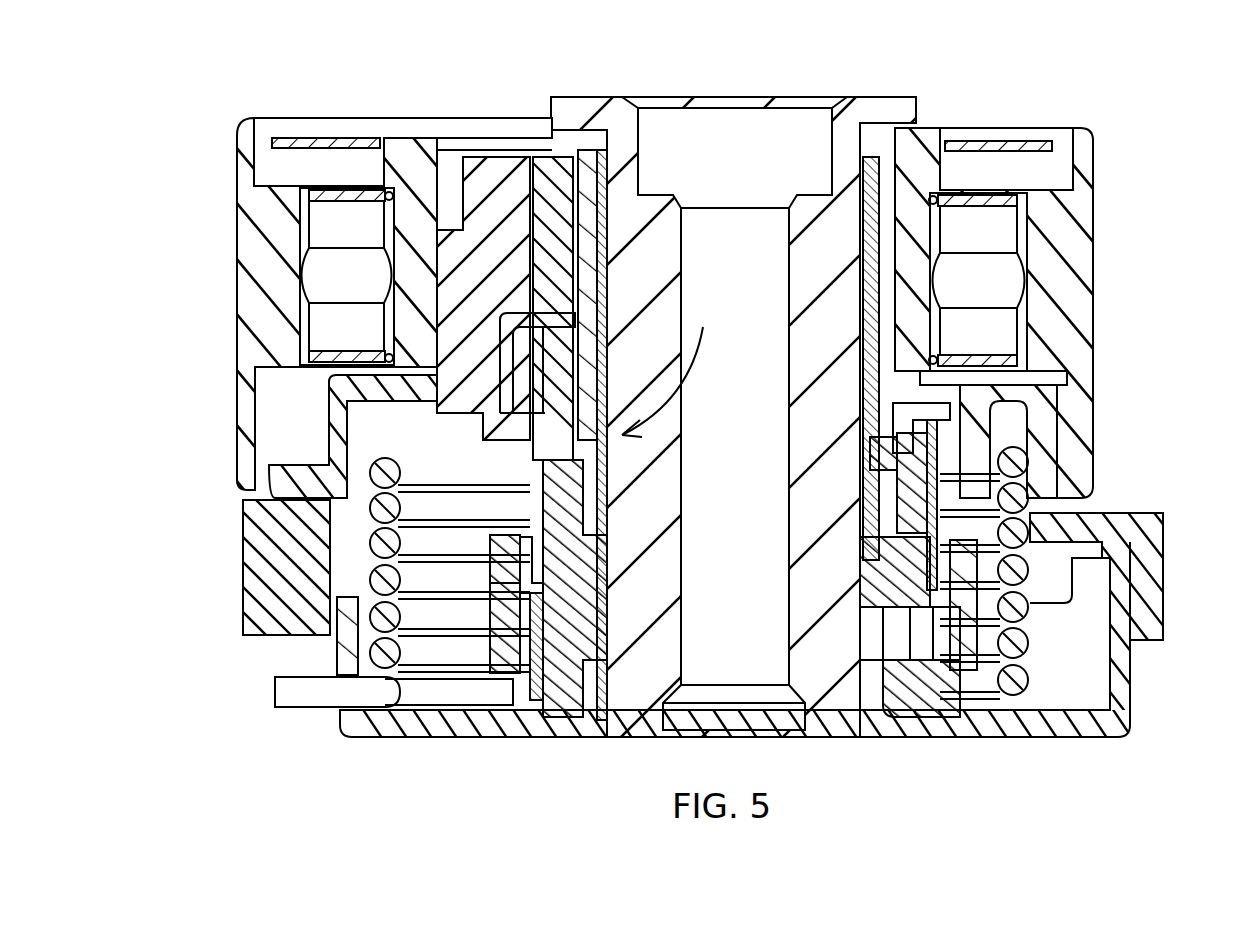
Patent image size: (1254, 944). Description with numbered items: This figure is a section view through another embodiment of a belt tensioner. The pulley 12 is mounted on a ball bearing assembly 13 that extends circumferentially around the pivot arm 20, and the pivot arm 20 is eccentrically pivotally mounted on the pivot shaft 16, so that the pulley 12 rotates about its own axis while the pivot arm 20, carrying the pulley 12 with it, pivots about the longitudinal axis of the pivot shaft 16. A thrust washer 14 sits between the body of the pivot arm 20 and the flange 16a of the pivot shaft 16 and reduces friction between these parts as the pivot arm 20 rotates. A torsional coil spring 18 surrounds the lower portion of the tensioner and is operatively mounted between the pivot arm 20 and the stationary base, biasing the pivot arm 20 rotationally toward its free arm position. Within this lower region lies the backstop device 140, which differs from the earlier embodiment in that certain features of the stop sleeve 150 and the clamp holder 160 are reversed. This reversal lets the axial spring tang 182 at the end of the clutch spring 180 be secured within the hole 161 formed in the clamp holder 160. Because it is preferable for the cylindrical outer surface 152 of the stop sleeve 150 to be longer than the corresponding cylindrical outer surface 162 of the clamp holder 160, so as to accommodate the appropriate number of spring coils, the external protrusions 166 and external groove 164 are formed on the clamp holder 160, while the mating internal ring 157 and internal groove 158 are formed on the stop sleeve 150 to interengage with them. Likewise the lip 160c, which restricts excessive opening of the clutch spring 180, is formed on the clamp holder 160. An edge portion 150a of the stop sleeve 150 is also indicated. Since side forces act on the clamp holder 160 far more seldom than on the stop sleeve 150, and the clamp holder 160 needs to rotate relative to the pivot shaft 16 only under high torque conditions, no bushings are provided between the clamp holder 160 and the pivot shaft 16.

The pulley 12 is at (1085, 303).
The ball bearing assembly 13 is at (1000, 237).
The thrust washer 14 is at (928, 150).
The pivot shaft 16 is at (807, 263).
The flange 16a is at (858, 120).
The torsional coil spring 18 is at (1017, 647).
The pivot arm 20 is at (1118, 522).
The backstop device 140 is at (678, 364).
The stop sleeve 150 is at (530, 425).
The piston lip 150a is at (538, 345).
The cylindrical outer surface 152 is at (530, 502).
The internal ring 157 is at (905, 490).
The internal groove 158 is at (877, 452).
The clamp holder 160 is at (565, 605).
The lip 160c is at (1040, 572).
The hole 161 is at (543, 717).
The cylindrical outer surface 162 is at (530, 570).
The external groove 164 is at (865, 497).
The external protrusions 166 is at (870, 442).
The clutch spring 180 is at (542, 566).
The axial spring tang 182 is at (537, 703).